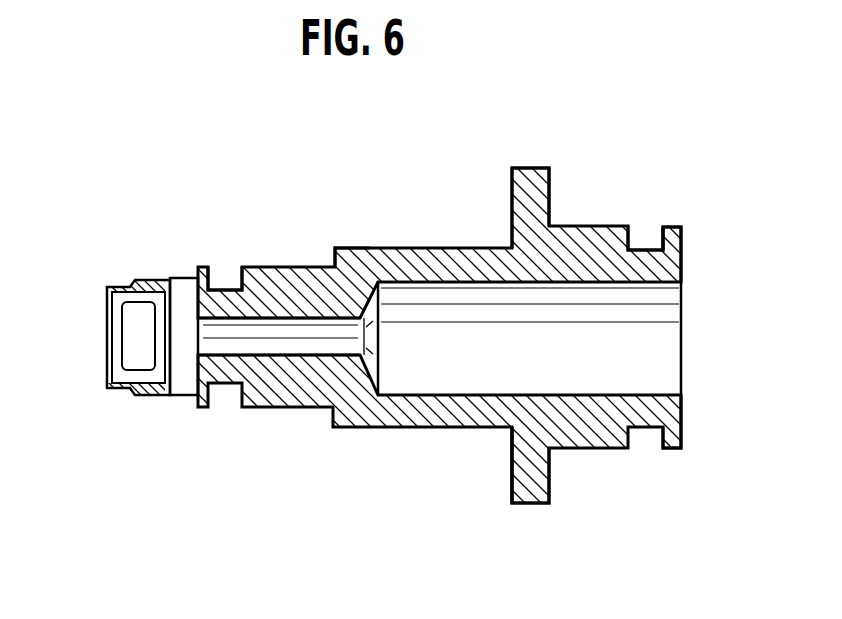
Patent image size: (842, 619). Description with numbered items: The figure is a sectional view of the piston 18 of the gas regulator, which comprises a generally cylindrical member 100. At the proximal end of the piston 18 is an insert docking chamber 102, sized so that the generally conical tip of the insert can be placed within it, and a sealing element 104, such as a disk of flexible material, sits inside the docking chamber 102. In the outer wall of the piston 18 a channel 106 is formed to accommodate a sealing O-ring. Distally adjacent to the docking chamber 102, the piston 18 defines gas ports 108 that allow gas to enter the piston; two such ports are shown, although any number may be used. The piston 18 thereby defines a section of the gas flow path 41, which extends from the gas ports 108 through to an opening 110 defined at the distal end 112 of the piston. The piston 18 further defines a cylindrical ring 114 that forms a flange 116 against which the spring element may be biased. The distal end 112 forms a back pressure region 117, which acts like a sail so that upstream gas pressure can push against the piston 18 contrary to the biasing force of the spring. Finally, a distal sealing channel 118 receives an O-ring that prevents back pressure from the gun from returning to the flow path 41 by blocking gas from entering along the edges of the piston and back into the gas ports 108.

The generally cylindrical member 100 is at (433, 247).
The insert docking chamber 102 is at (136, 280).
The sealing element 104 is at (133, 341).
The channel 106 is at (226, 289).
The gas port 108 is at (180, 278).
The opening 110 is at (682, 336).
The distal end 112 is at (682, 259).
The cylindrical ring 114 is at (536, 168).
The flange 116 is at (508, 457).
The back pressure region 117 is at (682, 431).
The distal sealing channel 118 is at (643, 250).
The piston 18 is at (350, 249).
The flow path 41 is at (272, 345).